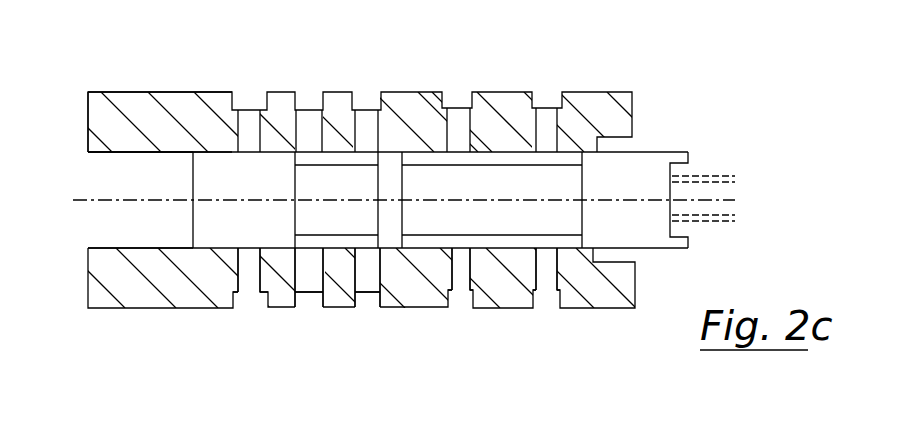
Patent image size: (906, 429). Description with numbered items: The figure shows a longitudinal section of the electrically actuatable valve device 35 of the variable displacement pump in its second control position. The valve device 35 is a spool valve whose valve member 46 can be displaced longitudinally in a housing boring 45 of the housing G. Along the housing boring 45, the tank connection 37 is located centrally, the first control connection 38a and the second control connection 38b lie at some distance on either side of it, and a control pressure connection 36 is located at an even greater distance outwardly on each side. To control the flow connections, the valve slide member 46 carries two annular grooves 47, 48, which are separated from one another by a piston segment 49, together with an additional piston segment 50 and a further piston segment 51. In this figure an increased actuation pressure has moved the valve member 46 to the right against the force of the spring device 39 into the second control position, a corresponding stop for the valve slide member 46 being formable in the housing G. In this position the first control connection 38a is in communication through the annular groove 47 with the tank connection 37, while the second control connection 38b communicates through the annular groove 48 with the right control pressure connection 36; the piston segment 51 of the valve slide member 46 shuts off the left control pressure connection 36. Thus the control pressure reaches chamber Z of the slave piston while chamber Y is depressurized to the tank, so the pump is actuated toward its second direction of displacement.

The valve device 35 is at (362, 179).
The housing G is at (93, 292).
The housing boring 45 is at (161, 146).
The valve member 46 is at (200, 178).
The annular groove 47 is at (334, 158).
The annular groove 48 is at (495, 157).
The piston segment 49 is at (390, 172).
The additional piston segment 50 is at (656, 161).
The piston segment 51 is at (212, 228).
The spring device 39 is at (722, 172).
The control pressure connection 36 is at (250, 298).
The tank connection 37 is at (371, 300).
The first control connection 38a is at (306, 299).
The second control connection 38b is at (462, 300).